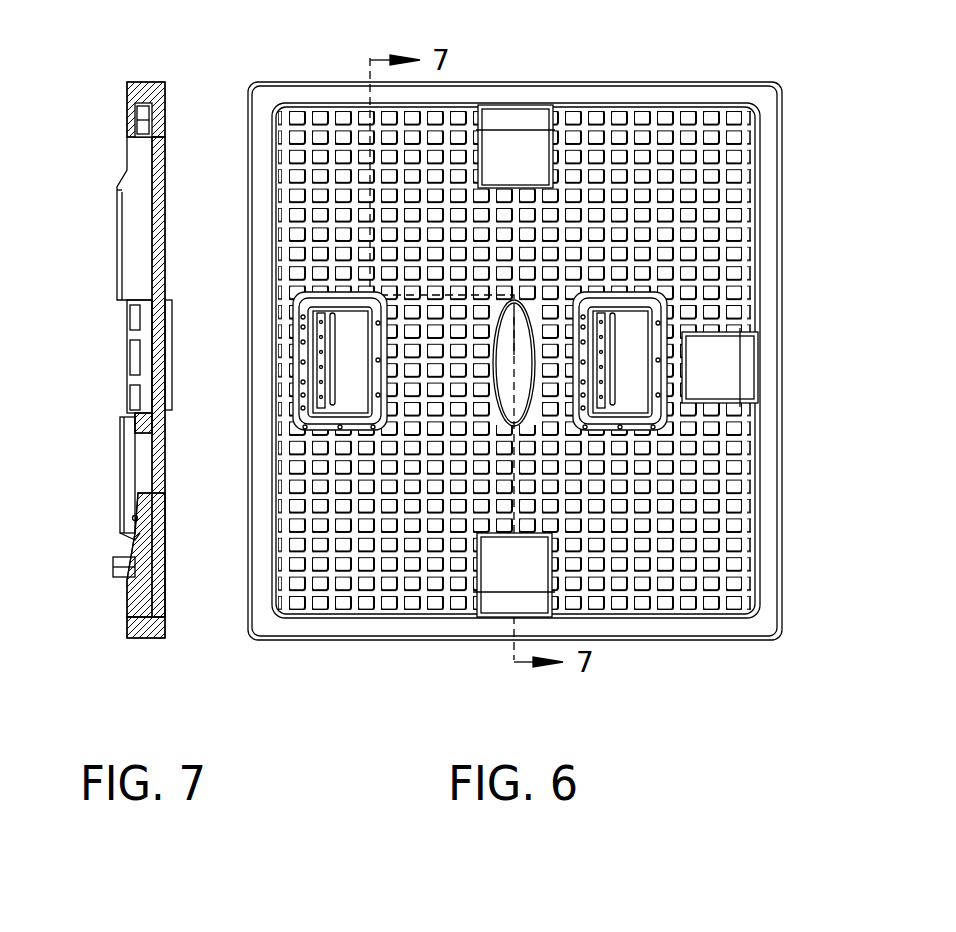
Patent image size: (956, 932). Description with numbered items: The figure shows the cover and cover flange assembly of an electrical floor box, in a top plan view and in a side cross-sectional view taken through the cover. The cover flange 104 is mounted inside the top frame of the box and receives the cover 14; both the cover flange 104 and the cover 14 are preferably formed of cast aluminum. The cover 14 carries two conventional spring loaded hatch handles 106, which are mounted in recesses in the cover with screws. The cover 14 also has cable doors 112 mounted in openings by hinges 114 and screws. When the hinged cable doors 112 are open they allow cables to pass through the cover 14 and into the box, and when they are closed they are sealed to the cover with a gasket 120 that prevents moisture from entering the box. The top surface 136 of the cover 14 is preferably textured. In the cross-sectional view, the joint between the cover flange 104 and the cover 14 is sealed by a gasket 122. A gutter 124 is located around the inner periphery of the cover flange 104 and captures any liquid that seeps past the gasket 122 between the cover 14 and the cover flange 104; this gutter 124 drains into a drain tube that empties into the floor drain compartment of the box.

In FIG. 7, the cover 14 is at (168, 250).
In FIG. 6, the cover 14 is at (562, 328).
In FIG. 7, the cover flange 104 is at (165, 84).
In FIG. 6, the cover flange 104 is at (590, 82).
In FIG. 7, the hatch handles 106 is at (134, 218).
In FIG. 6, the hatch handles 106 is at (345, 360).
In FIG. 7, the cable doors 112 is at (165, 640).
In FIG. 6, the cable doors 112 is at (515, 145).
In FIG. 7, the hinges 114 is at (118, 495).
In FIG. 7, the gasket 120 is at (130, 520).
In FIG. 7, the gasket 122 is at (142, 80).
In FIG. 7, the gutter 124 is at (128, 138).
In FIG. 6, the top surface 136 is at (640, 135).